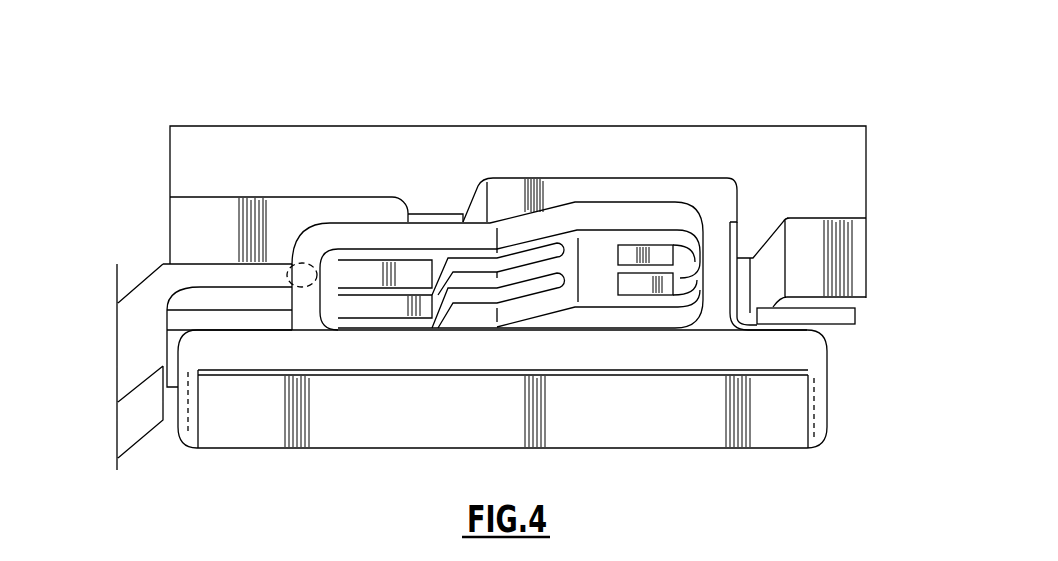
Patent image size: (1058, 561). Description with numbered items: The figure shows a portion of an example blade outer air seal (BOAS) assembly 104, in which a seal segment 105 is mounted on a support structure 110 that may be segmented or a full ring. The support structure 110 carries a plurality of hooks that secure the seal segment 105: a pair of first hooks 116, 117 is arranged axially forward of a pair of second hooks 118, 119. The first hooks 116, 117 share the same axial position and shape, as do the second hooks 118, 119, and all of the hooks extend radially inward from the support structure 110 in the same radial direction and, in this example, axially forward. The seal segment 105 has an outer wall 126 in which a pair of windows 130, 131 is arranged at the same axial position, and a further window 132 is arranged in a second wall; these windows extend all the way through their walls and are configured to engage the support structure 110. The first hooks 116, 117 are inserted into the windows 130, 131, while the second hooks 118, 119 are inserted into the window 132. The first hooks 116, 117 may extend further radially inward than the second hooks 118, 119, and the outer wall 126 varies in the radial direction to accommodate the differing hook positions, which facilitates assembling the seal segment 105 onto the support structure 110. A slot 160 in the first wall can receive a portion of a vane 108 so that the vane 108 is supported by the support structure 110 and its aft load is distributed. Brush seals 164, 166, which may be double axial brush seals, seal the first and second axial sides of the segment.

The BOAS assembly 104 is at (849, 75).
The seal segment 105 is at (802, 357).
The vane 108 is at (137, 348).
The support structure 110 is at (437, 141).
The first hook 116 is at (358, 277).
The first hook 117 is at (368, 306).
The second hook 118 is at (657, 258).
The second hook 119 is at (641, 287).
The outer wall 126 is at (615, 218).
The window 130 is at (512, 260).
The window 131 is at (511, 292).
The window 132 is at (675, 238).
The slot 160 is at (306, 262).
The brush seal 164 is at (211, 320).
The brush seal 166 is at (836, 317).